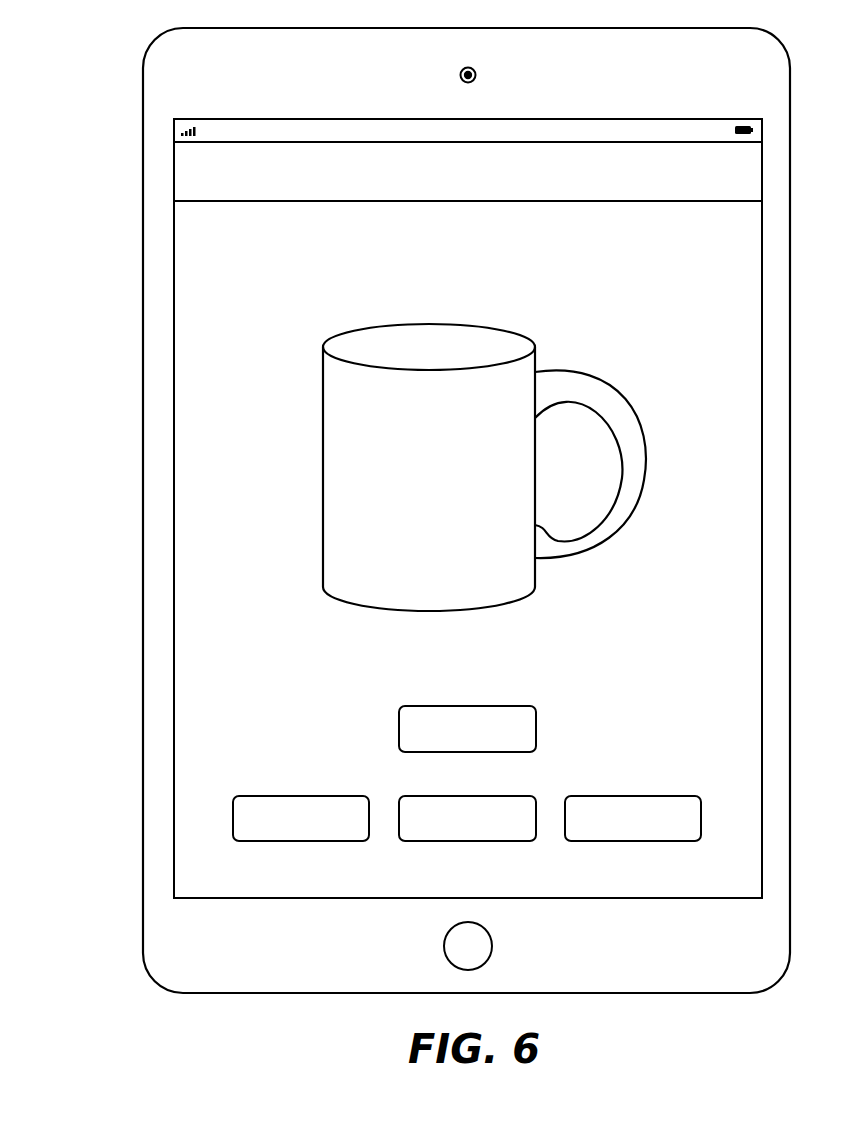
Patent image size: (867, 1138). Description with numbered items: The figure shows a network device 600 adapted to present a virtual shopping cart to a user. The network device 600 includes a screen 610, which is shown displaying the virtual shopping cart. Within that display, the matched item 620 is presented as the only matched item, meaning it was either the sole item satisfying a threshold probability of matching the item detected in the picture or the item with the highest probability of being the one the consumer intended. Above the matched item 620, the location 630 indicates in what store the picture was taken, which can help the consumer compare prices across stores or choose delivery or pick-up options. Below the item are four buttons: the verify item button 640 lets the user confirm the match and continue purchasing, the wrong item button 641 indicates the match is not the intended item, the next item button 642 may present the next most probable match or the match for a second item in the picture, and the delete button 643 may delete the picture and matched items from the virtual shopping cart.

The network device 600 is at (92, 187).
The screen 610 is at (203, 480).
The matched item 620 is at (583, 369).
The location 630 is at (702, 268).
The verify item button 640 is at (399, 721).
The wrong item button 641 is at (253, 796).
The next item button 642 is at (449, 841).
The delete button 643 is at (633, 796).